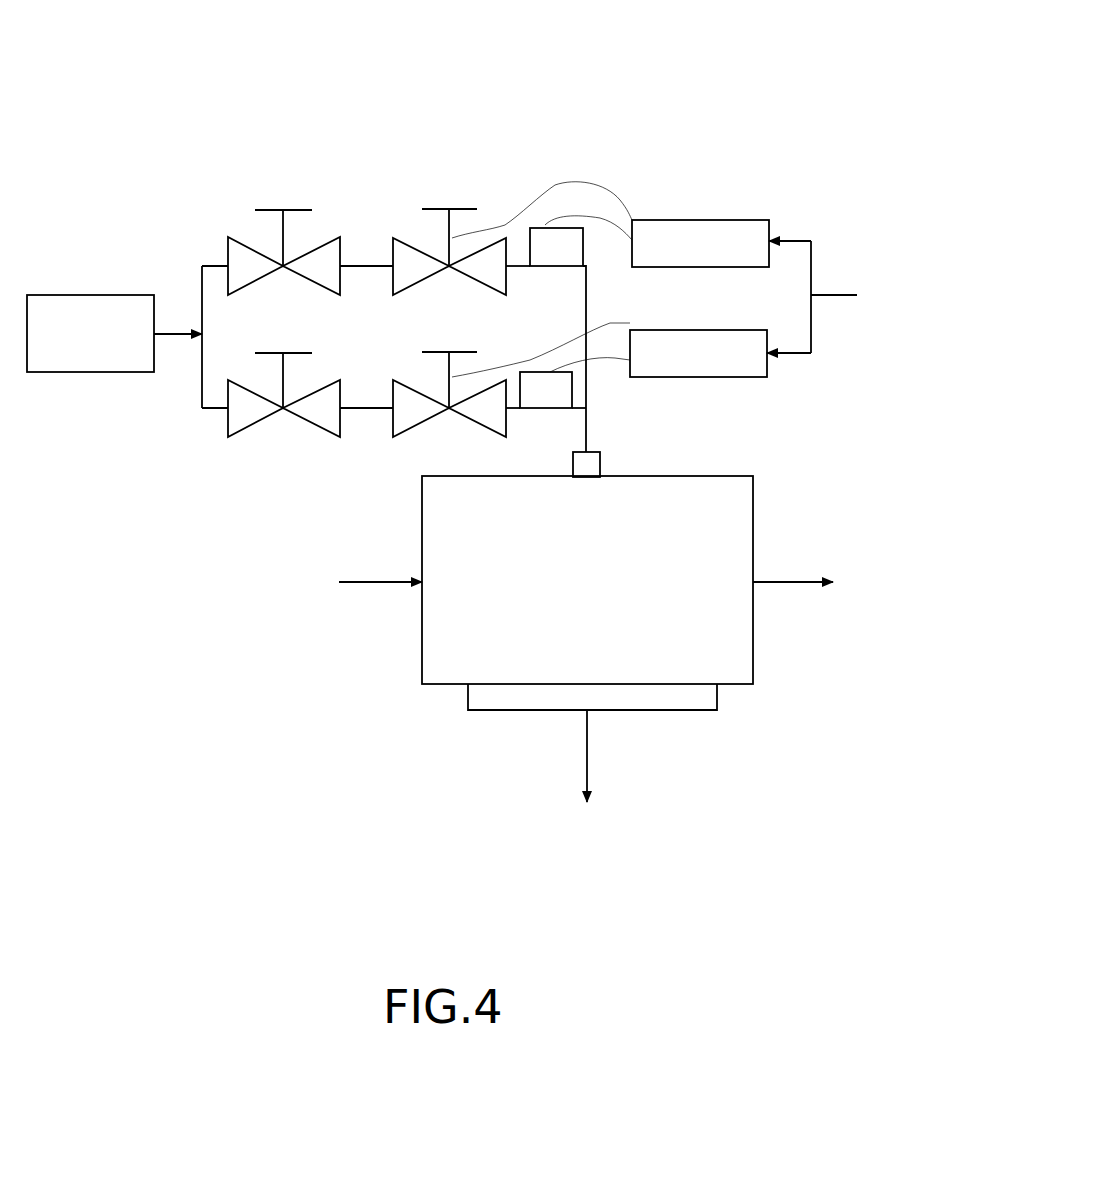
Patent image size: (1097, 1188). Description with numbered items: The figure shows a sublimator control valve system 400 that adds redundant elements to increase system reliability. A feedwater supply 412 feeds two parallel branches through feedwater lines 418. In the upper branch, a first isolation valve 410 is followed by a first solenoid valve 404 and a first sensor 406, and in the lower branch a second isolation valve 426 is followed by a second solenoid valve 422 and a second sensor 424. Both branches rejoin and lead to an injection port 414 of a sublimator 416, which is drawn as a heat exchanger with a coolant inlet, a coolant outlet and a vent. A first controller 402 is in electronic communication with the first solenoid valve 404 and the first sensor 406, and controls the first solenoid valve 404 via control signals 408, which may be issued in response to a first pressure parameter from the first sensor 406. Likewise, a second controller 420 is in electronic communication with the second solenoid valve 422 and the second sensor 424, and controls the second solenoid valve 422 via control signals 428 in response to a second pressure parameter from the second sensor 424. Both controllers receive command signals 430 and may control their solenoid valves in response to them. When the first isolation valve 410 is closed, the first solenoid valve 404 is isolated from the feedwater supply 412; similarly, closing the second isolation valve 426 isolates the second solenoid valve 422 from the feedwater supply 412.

The sublimator control valve system 400 is at (716, 49).
The first controller 402 is at (700, 222).
The first solenoid valve 404 is at (410, 255).
The first sensor 406 is at (563, 262).
The control signals 408 is at (550, 188).
The first isolation valve 410 is at (245, 255).
The feedwater supply 412 is at (122, 303).
The injection port 414 is at (590, 463).
The sublimator 416 is at (698, 485).
The feedwater lines 418 is at (200, 280).
The second controller 420 is at (698, 333).
The second solenoid valve 422 is at (400, 415).
The second sensor 424 is at (540, 405).
The second isolation valve 426 is at (240, 418).
The control signals 428 is at (520, 360).
The command signals 430 is at (850, 293).